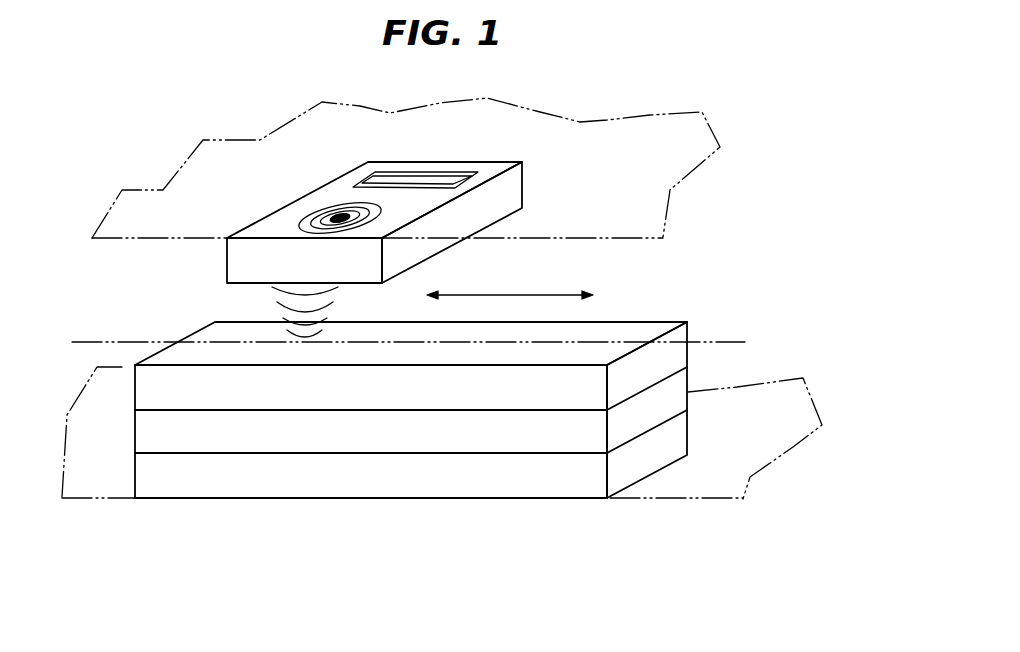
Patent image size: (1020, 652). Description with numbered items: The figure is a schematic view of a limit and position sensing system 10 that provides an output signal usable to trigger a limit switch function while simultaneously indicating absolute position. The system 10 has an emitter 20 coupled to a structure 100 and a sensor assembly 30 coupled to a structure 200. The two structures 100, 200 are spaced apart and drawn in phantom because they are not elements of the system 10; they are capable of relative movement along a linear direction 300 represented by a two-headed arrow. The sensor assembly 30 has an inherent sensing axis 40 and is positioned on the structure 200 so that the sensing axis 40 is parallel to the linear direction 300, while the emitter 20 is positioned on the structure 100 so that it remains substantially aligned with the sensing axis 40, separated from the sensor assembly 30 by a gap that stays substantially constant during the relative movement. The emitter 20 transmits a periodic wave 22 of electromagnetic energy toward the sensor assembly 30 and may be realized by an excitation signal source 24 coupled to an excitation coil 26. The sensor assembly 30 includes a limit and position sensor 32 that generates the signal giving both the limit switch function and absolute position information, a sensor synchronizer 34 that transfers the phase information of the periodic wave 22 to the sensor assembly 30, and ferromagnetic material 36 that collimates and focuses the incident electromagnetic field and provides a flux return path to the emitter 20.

The limit and position sensing system 10 is at (58, 242).
The emitter 20 is at (227, 270).
The periodic wave 22 is at (270, 310).
The excitation signal source 24 is at (365, 187).
The excitation coil 26 is at (310, 217).
The sensor assembly 30 is at (416, 411).
The limit and position sensor 32 is at (677, 364).
The sensor synchronizer 34 is at (677, 405).
The ferromagnetic material 36 is at (677, 451).
The sensing axis 40 is at (703, 343).
The structure 100 is at (667, 226).
The structure 200 is at (793, 447).
The linear direction 300 is at (553, 295).